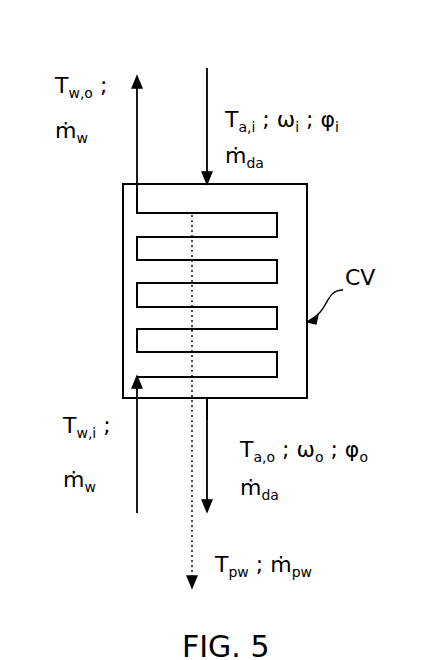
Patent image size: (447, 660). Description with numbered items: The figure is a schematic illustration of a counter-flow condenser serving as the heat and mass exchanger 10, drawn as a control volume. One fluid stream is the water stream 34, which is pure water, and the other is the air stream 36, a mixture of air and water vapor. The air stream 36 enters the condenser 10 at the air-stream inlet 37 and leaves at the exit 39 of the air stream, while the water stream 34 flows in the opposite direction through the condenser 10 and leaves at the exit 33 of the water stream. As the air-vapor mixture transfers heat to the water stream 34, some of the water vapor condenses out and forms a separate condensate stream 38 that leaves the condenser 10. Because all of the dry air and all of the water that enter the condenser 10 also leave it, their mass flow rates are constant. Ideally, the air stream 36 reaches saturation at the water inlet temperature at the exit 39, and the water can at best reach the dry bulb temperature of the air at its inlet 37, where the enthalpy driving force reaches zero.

The condenser 10 is at (88, 207).
The exit of the water stream 33 is at (137, 180).
The water stream 34 is at (138, 452).
The air stream 36 is at (206, 121).
The air-stream inlet 37 is at (205, 183).
The condensate stream 38 is at (190, 556).
The exit of the air stream 39 is at (208, 400).